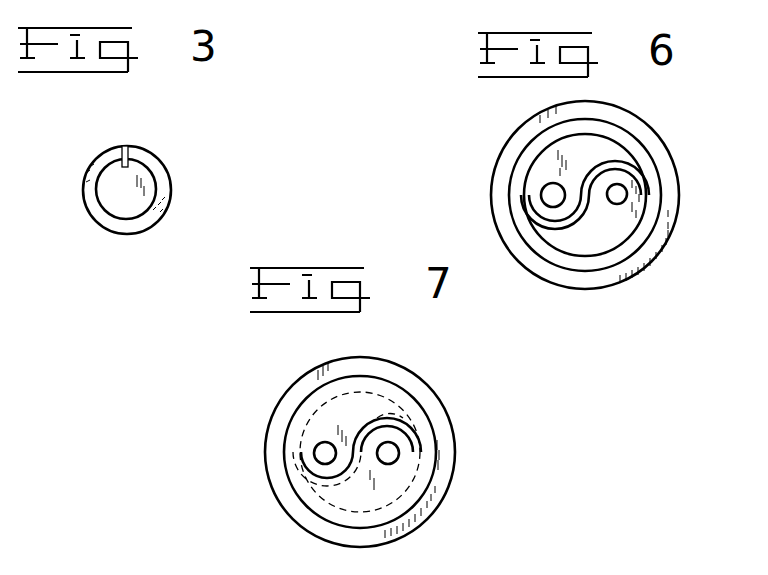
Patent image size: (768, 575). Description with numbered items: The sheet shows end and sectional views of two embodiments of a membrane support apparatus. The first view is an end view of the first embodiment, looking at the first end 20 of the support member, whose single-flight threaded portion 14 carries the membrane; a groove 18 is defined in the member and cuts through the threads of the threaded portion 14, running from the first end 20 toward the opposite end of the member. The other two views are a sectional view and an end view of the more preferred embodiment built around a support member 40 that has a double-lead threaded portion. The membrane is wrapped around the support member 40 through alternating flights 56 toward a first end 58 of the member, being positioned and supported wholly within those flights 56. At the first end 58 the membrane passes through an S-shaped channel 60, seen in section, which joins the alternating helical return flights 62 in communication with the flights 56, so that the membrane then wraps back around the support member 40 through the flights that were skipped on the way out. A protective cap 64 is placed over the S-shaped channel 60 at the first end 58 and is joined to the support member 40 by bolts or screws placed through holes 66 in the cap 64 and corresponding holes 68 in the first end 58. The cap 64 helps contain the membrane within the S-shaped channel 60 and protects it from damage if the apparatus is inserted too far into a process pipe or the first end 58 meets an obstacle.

In FIG. 3, the threaded portion 14 is at (176, 163).
In FIG. 3, the groove 18 is at (125, 146).
In FIG. 3, the first end 20 is at (125, 202).
In FIG. 6, the support member 40 is at (653, 117).
In FIG. 7, the support member 40 is at (504, 441).
In FIG. 6, the flights 56 is at (518, 178).
In FIG. 7, the flights 56 is at (292, 466).
In FIG. 6, the first end 58 is at (573, 152).
In FIG. 6, the S-shaped channel 60 is at (636, 165).
In FIG. 7, the S-shaped channel 60 is at (398, 412).
In FIG. 6, the return flights 62 is at (538, 242).
In FIG. 7, the return flights 62 is at (337, 504).
In FIG. 7, the protective cap 64 is at (318, 390).
In FIG. 7, the holes 66 is at (397, 457).
In FIG. 6, the holes 68 is at (620, 196).